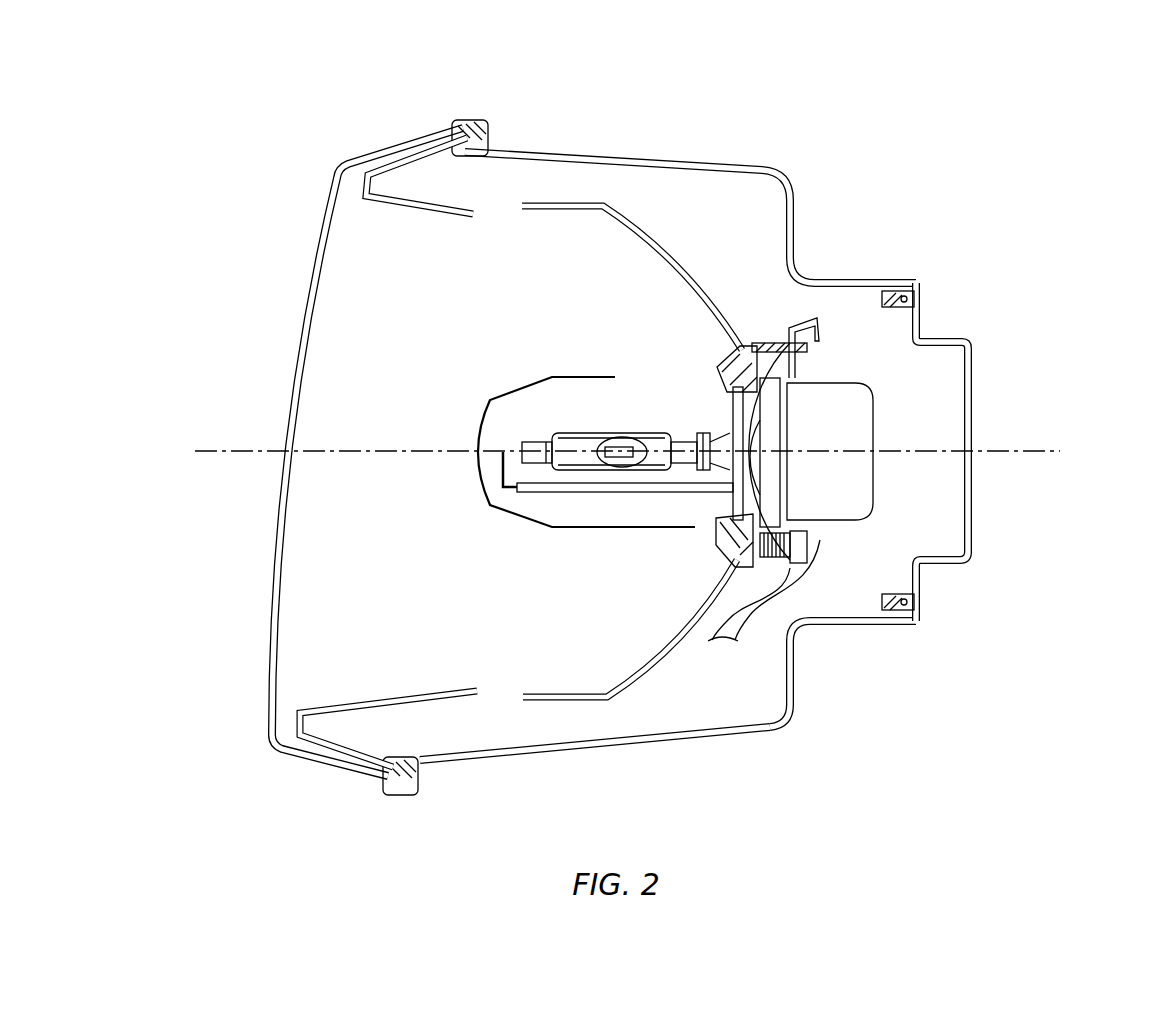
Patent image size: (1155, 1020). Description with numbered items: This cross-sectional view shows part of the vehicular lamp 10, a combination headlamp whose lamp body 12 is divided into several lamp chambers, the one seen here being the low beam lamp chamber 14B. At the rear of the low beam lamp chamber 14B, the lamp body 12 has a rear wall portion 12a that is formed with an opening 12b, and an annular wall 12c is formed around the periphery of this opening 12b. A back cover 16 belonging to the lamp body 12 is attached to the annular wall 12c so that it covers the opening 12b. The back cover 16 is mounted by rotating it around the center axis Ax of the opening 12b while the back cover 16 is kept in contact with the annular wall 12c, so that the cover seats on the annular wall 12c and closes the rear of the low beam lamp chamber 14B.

The vehicular lamp 10 is at (246, 162).
The lamp body 12 is at (797, 191).
The rear wall portion 12a is at (795, 690).
The opening 12b is at (838, 291).
The annular wall 12c is at (861, 282).
The low beam lamp chamber 14B is at (488, 345).
The back cover 16 is at (996, 389).
The center axis Ax is at (1050, 453).